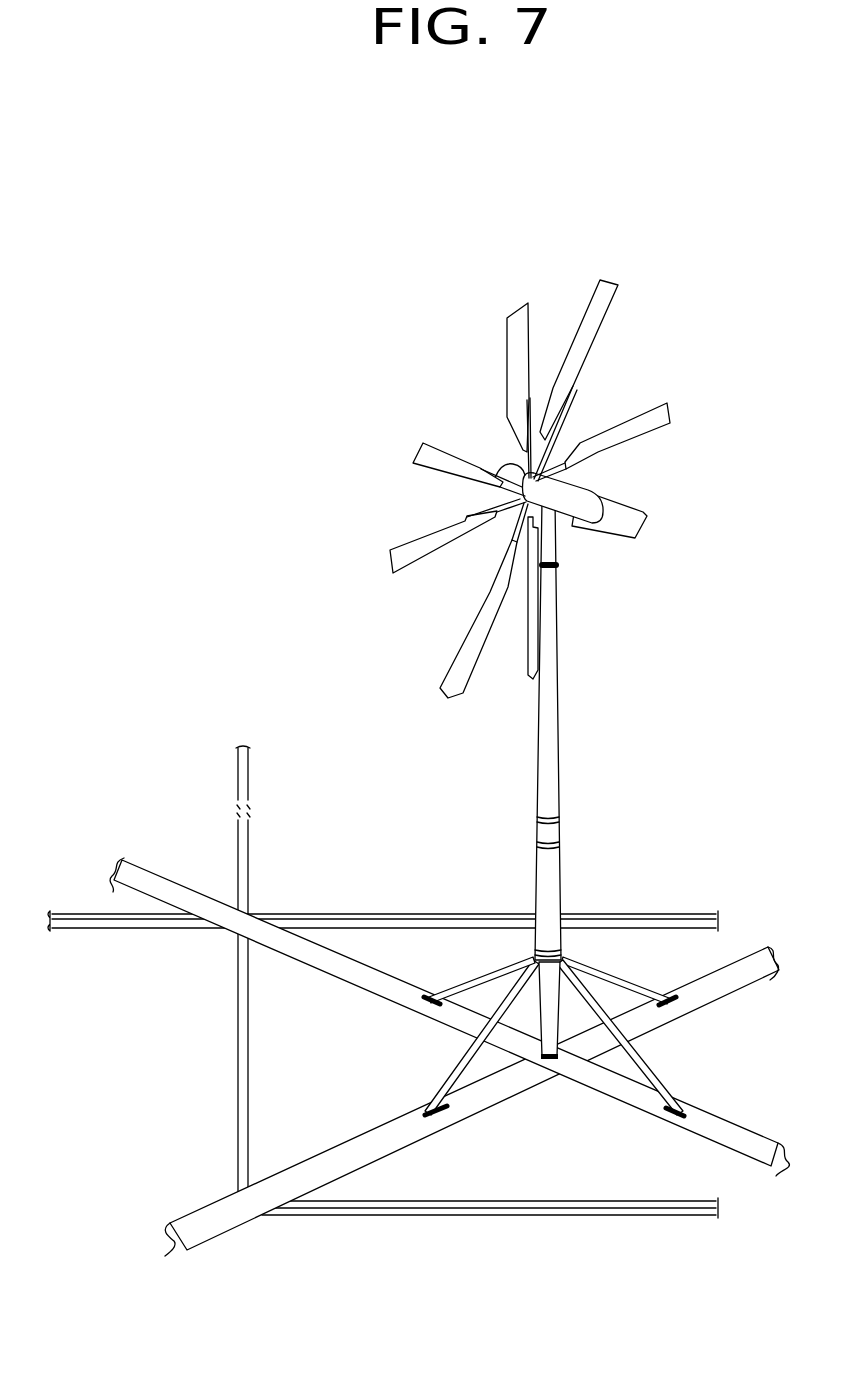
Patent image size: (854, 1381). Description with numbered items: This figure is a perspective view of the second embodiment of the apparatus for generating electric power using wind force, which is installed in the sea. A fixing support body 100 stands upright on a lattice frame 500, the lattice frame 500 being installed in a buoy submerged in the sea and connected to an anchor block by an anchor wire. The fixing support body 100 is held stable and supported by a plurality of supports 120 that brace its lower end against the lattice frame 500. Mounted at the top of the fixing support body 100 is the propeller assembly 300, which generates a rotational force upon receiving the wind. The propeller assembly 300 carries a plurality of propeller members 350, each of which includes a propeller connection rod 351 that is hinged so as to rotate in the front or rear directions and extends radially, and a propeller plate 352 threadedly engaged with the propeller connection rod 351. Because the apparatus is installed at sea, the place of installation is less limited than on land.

The propeller assembly 300 is at (579, 471).
The propeller member 350 is at (581, 489).
The propeller connection rod 351 is at (572, 400).
The propeller plate 352 is at (603, 313).
The fixing support body 100 is at (576, 780).
The supports 120 is at (608, 1012).
The lattice frame 500 is at (377, 902).